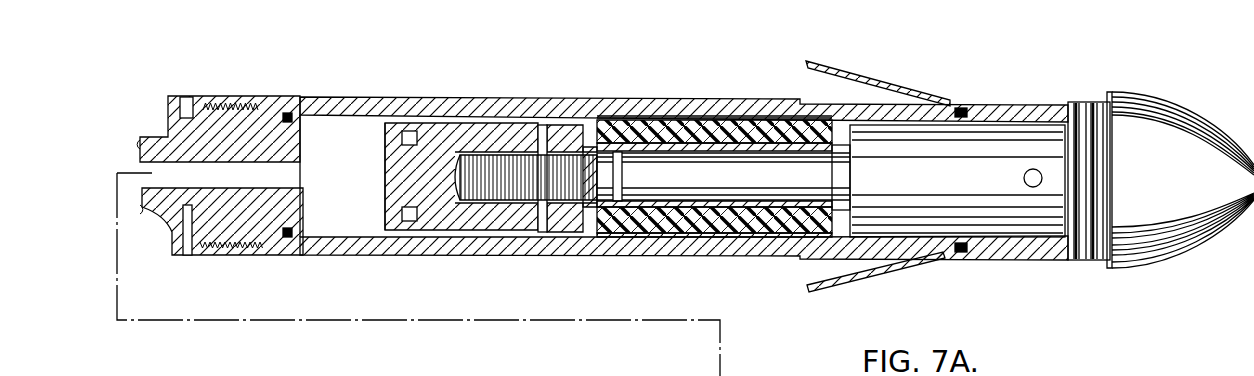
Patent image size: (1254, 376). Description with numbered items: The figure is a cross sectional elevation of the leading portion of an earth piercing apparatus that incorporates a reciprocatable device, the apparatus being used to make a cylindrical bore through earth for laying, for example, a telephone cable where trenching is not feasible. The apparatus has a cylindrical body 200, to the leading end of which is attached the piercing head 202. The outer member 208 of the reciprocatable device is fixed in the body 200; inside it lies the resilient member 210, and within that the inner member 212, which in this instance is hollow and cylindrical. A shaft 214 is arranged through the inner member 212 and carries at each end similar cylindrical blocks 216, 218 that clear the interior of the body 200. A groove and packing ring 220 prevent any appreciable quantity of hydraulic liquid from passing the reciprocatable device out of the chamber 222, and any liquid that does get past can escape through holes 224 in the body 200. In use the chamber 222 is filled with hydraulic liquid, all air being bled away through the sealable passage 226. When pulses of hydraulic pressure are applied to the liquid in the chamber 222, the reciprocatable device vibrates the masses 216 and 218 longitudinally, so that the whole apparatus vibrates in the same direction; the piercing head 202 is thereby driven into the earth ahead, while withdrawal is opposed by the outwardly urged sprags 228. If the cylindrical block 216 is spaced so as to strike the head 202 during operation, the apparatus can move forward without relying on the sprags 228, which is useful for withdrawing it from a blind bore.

The cylindrical body 200 is at (695, 162).
The piercing head 202 is at (1157, 213).
The outer member 208 is at (707, 118).
The resilient member 210 is at (638, 128).
The inner member 212 is at (668, 105).
The shaft 214 is at (767, 173).
The cylindrical block 216 is at (1020, 130).
The cylindrical block 218 is at (477, 140).
The groove and packing ring 220 is at (597, 125).
The chamber 222 is at (338, 135).
The holes 224 is at (843, 105).
The sealable passage 226 is at (188, 242).
The sprags 228 is at (958, 108).